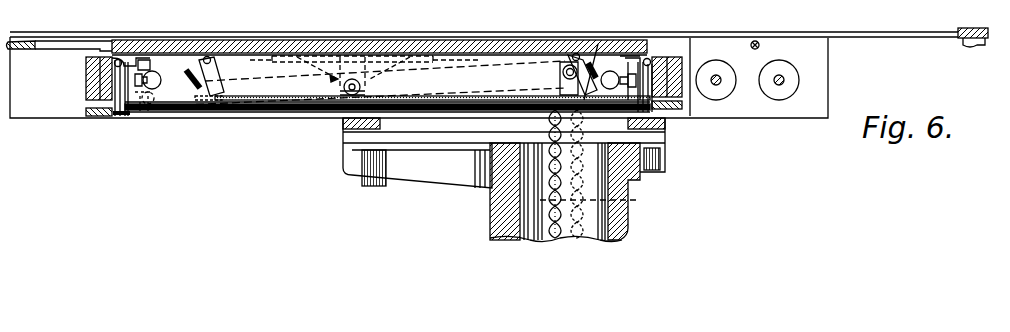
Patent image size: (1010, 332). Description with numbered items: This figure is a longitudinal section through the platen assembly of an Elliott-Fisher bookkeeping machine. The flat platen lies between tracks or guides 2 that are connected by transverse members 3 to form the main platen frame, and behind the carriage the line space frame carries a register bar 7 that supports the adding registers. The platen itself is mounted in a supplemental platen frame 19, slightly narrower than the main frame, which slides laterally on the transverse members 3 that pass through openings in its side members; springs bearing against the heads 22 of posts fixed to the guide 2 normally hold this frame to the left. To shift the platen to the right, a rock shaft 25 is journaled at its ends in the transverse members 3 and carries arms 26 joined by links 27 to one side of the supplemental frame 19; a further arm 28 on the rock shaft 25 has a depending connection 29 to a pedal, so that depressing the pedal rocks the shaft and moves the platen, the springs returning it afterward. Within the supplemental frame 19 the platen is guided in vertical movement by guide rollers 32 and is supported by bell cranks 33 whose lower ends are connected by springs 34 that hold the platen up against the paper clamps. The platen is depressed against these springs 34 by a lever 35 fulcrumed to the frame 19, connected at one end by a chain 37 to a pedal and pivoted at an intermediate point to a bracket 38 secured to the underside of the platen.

The tracks or guides 2 is at (78, 31).
The transverse members 3 is at (85, 78).
The register bar 7 is at (487, 38).
The supplemental platen frame 19 is at (105, 57).
The heads 22 is at (385, 81).
The rock shaft 25 is at (262, 112).
The arms 26 is at (134, 100).
The links 27 is at (158, 68).
The arm 28 is at (540, 108).
The connection 29 is at (520, 205).
The guide rollers 32 is at (212, 61).
The bell cranks 33 is at (205, 81).
The springs 34 is at (265, 100).
The lever 35 is at (449, 55).
The chain 37 is at (609, 179).
The bracket 38 is at (372, 72).